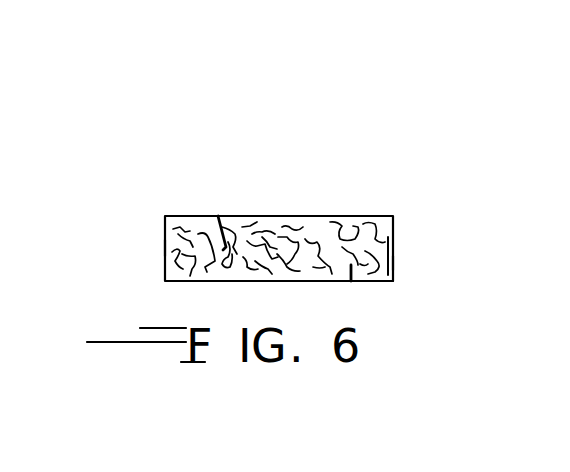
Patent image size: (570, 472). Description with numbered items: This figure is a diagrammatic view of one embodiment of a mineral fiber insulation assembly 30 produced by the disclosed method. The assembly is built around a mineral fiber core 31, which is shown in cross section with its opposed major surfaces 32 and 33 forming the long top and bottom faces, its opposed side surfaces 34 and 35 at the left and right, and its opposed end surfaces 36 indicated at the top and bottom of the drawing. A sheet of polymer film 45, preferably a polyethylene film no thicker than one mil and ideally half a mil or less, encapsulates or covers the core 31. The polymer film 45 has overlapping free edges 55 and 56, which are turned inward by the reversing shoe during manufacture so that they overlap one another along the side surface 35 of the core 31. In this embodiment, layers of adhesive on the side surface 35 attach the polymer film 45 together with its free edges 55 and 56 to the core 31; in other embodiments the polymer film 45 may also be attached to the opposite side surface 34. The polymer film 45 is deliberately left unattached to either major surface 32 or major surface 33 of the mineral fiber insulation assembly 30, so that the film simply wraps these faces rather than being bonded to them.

The mineral fiber insulation assembly 30 is at (288, 212).
The mineral fiber core 31 is at (218, 216).
The major surface 32 is at (183, 216).
The major surface 33 is at (203, 281).
The side surface 34 is at (165, 248).
The side surface 35 is at (393, 277).
The end surfaces 36 is at (343, 217).
The polymer film 45 is at (242, 216).
The free edge 55 is at (393, 253).
The free edge 56 is at (391, 262).